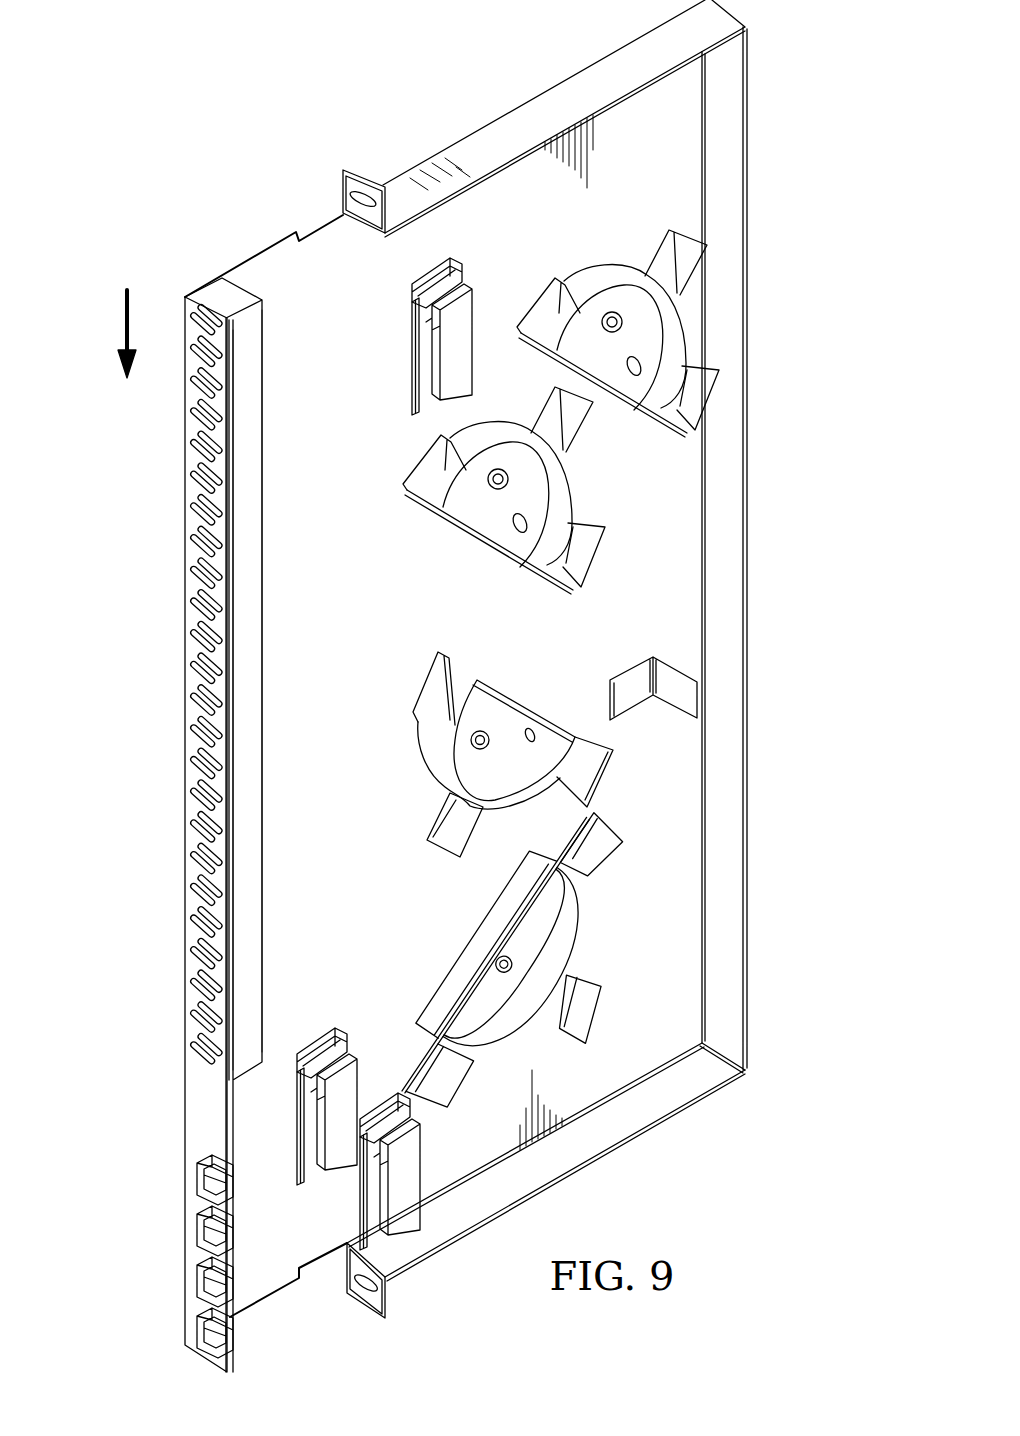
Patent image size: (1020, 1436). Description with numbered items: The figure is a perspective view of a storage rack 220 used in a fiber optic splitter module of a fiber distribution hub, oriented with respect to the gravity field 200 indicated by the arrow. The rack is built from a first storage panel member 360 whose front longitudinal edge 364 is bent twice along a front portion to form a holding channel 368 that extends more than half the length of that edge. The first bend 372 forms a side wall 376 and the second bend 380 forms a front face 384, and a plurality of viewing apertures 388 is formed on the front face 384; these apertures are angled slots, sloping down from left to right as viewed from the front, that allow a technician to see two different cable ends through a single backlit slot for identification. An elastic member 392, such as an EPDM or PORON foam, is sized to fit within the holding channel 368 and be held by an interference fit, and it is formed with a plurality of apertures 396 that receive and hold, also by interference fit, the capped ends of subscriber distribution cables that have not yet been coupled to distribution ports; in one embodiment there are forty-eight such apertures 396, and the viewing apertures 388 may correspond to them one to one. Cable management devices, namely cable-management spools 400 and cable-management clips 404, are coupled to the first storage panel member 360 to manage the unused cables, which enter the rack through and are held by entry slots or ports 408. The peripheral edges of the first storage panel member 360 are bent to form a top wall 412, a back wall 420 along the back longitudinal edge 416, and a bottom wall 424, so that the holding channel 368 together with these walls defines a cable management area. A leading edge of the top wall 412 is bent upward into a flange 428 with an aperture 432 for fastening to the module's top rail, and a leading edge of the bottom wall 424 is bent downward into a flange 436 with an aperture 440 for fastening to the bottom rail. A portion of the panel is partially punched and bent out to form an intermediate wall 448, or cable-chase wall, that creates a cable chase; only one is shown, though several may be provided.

The gravity field 200 is at (122, 325).
The storage rack 220 is at (257, 256).
The first storage panel member 360 is at (612, 176).
The front longitudinal edge 364 is at (230, 1150).
The holding channel 368 is at (278, 336).
The first bend 372 is at (236, 405).
The side wall 376 is at (250, 706).
The second bend 380 is at (184, 306).
The front face 384 is at (196, 736).
The viewing apertures 388 is at (196, 856).
The elastic member 392 is at (196, 458).
The apertures 396 is at (196, 492).
The cable-management spools 400 is at (586, 282).
The cable-management clips 404 is at (462, 368).
The entry slots or ports 408 is at (235, 1291).
The top wall 412 is at (622, 62).
The back longitudinal edge 416 is at (708, 200).
The back wall 420 is at (738, 80).
The bottom wall 424 is at (672, 1102).
The flange 428 is at (350, 172).
The aperture 432 is at (350, 192).
The flange 436 is at (393, 1310).
The aperture 440 is at (360, 1295).
The intermediate wall 448 is at (683, 690).